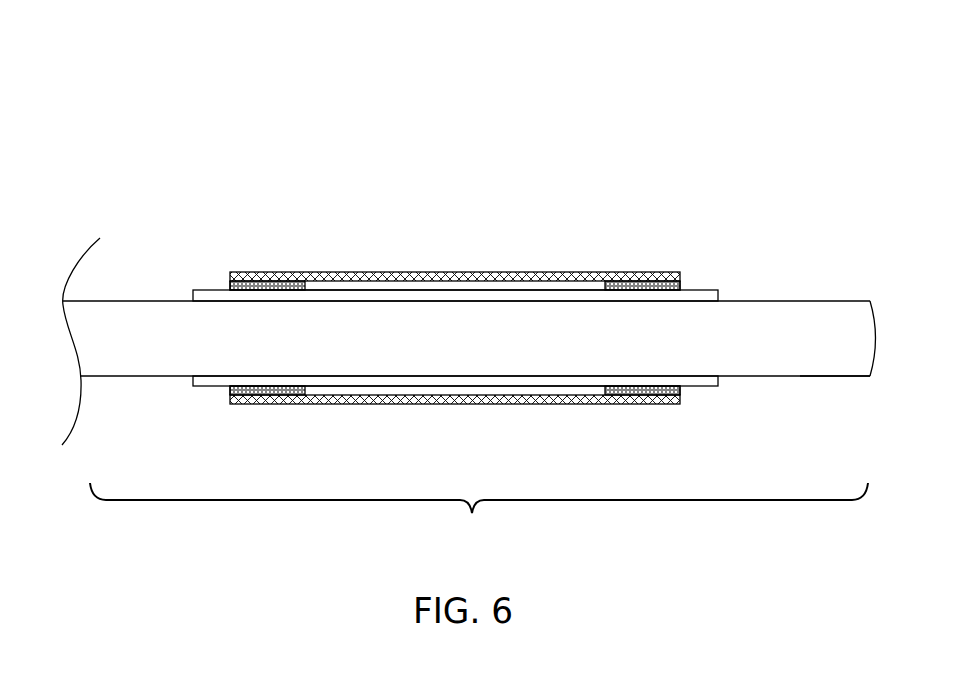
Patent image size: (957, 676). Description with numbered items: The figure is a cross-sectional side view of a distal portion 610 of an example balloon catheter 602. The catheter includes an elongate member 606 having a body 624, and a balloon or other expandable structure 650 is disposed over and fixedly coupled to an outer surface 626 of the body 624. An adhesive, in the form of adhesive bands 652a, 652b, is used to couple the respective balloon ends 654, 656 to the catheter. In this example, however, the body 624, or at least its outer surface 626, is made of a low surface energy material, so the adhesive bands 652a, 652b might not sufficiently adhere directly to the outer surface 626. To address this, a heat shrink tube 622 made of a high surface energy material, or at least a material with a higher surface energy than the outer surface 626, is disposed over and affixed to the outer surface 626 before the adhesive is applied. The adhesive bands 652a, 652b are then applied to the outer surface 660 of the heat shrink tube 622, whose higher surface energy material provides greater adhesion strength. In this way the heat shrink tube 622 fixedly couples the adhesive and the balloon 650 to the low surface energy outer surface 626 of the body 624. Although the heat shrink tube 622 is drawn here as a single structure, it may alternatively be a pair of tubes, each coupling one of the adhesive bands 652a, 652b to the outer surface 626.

The balloon catheter 602 is at (870, 112).
The elongate member 606 is at (143, 310).
The distal portion 610 is at (479, 516).
The heat shrink tube 622 is at (380, 380).
The body 624 is at (785, 357).
The outer surface 626 is at (780, 300).
The balloon 650 is at (453, 398).
The adhesive band 652a is at (298, 287).
The adhesive band 652b is at (610, 288).
The balloon end 654 is at (245, 273).
The balloon end 656 is at (667, 272).
The outer surface of the heat shrink tube 660 is at (537, 385).